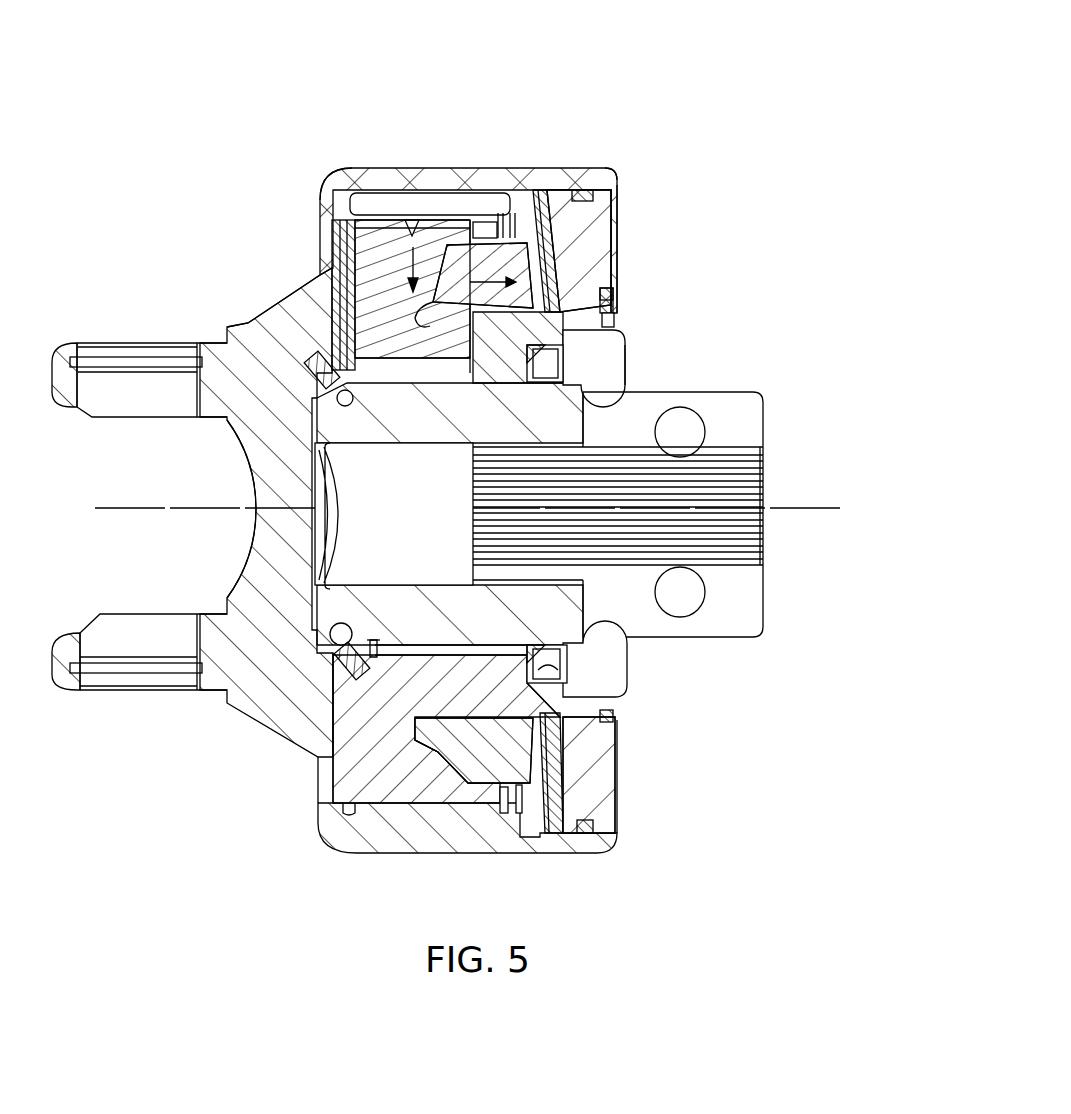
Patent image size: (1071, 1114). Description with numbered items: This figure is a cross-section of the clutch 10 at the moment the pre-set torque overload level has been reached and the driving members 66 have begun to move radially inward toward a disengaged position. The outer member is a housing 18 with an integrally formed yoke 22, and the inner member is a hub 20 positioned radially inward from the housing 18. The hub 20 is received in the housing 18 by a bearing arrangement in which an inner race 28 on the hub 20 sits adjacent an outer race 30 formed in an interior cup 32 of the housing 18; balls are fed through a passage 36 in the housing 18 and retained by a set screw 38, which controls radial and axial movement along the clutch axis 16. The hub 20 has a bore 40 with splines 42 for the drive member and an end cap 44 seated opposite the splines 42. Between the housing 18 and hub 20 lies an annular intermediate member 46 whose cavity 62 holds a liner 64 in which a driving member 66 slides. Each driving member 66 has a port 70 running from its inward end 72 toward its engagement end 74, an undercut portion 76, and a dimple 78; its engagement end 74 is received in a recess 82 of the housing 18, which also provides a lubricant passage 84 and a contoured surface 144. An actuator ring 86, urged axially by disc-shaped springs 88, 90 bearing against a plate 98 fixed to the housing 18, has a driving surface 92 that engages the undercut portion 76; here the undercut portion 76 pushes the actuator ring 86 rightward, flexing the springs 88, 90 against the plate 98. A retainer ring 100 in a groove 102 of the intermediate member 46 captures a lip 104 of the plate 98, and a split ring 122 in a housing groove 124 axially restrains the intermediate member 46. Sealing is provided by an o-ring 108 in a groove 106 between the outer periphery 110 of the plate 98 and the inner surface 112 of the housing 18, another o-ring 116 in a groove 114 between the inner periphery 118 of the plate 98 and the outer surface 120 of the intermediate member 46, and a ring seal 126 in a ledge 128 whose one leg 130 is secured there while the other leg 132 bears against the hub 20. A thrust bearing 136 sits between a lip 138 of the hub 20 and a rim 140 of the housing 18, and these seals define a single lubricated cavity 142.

The clutch 10 is at (665, 63).
The clutch axis 16 is at (826, 508).
The housing 18 is at (325, 190).
The hub 20 is at (757, 383).
The yoke 22 is at (52, 343).
The inner race 28 is at (340, 407).
The outer race 30 is at (333, 642).
The interior cup 32 is at (300, 418).
The passage 36 is at (268, 318).
The set screw 38 is at (322, 362).
The bore 40 is at (428, 558).
The splines 42 is at (745, 470).
The end cap 44 is at (343, 470).
The intermediate member 46 is at (640, 350).
The cavity 62 is at (438, 376).
The liner 64 is at (345, 250).
The driving member 66 is at (480, 200).
The port 70 is at (418, 383).
The inward end 72 is at (383, 383).
The engagement end 74 is at (362, 193).
The undercut portion 76 is at (474, 292).
The dimple 78 is at (405, 198).
The recess 82 is at (436, 186).
The passage 84 is at (458, 210).
The actuator ring 86 is at (470, 785).
The spring 88 is at (533, 792).
The spring 90 is at (548, 846).
The driving surface 92 is at (431, 753).
The plate 98 is at (590, 250).
The retainer ring 100 is at (614, 300).
The groove 102 is at (620, 318).
The lip 104 is at (588, 300).
The groove 106 is at (600, 203).
The o-ring 108 is at (603, 192).
The outer periphery 110 is at (616, 192).
The inner surface 112 is at (546, 190).
The groove 114 is at (594, 368).
The o-ring 116 is at (632, 752).
The inner periphery 118 is at (572, 705).
The outer surface 120 is at (618, 718).
The split ring 122 is at (572, 168).
The groove 124 is at (508, 792).
The ring seal 126 is at (580, 662).
The ledge 128 is at (545, 690).
The leg 130 is at (545, 664).
The leg 132 is at (536, 384).
The thrust bearing 136 is at (383, 649).
The lip 138 is at (375, 637).
The rim 140 is at (352, 650).
The cavity 142 is at (305, 457).
The contoured surface 144 is at (393, 214).